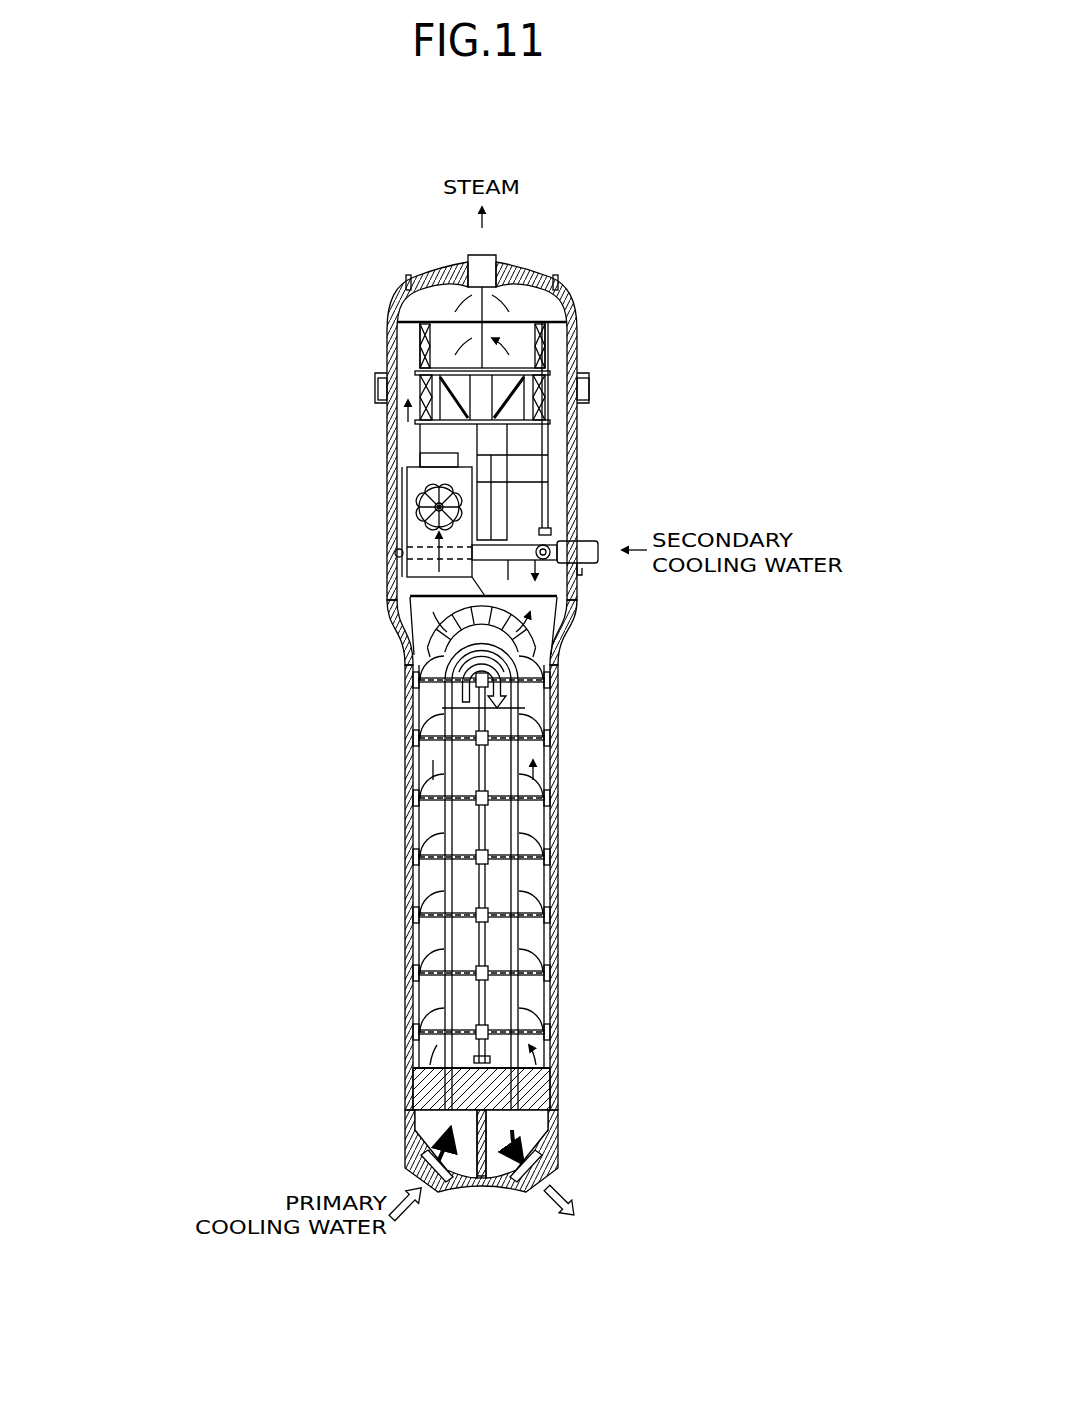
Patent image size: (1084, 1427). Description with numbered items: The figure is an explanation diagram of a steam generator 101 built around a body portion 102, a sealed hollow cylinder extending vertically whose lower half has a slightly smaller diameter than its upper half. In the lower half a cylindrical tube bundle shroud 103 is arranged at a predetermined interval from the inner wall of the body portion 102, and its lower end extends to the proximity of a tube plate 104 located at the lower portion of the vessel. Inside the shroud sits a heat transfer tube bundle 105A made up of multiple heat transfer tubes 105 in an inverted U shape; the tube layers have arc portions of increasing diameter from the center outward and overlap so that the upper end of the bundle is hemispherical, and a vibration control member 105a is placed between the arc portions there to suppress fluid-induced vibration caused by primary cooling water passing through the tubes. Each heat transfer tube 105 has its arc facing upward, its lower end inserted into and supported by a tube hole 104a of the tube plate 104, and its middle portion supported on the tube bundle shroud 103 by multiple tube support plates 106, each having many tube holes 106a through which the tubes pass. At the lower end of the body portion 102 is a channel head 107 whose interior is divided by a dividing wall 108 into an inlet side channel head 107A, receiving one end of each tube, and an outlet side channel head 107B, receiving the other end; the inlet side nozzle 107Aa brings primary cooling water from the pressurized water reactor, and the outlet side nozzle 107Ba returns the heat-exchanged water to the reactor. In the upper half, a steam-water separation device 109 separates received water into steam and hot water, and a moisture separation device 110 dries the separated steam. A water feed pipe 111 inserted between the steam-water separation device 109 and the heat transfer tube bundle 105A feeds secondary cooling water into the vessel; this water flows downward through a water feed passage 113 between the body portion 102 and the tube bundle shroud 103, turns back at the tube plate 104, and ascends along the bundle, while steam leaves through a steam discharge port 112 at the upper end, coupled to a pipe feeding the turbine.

The steam generator 101 is at (678, 183).
The body portion 102 is at (390, 425).
The tube bundle shroud 103 is at (400, 622).
The tube plate 104 is at (552, 1082).
The tube hole 104a is at (550, 1068).
The heat transfer tube 105 is at (442, 823).
The heat transfer tube bundle 105A is at (545, 663).
The vibration control member 105a is at (529, 645).
The tube support plate 106 is at (545, 668).
The tube hole 106a is at (420, 668).
The channel head 107 is at (405, 1118).
The inlet side channel head 107A is at (412, 1138).
The outlet side channel head 107B is at (538, 1127).
The inlet side nozzle 107Aa is at (435, 1190).
The outlet side nozzle 107Ba is at (540, 1187).
The dividing wall 108 is at (492, 1188).
The steam-water separation device 109 is at (405, 507).
The moisture separation device 110 is at (521, 352).
The water feed pipe 111 is at (600, 535).
The steam discharge port 112 is at (484, 266).
The water feed passage 113 is at (413, 990).